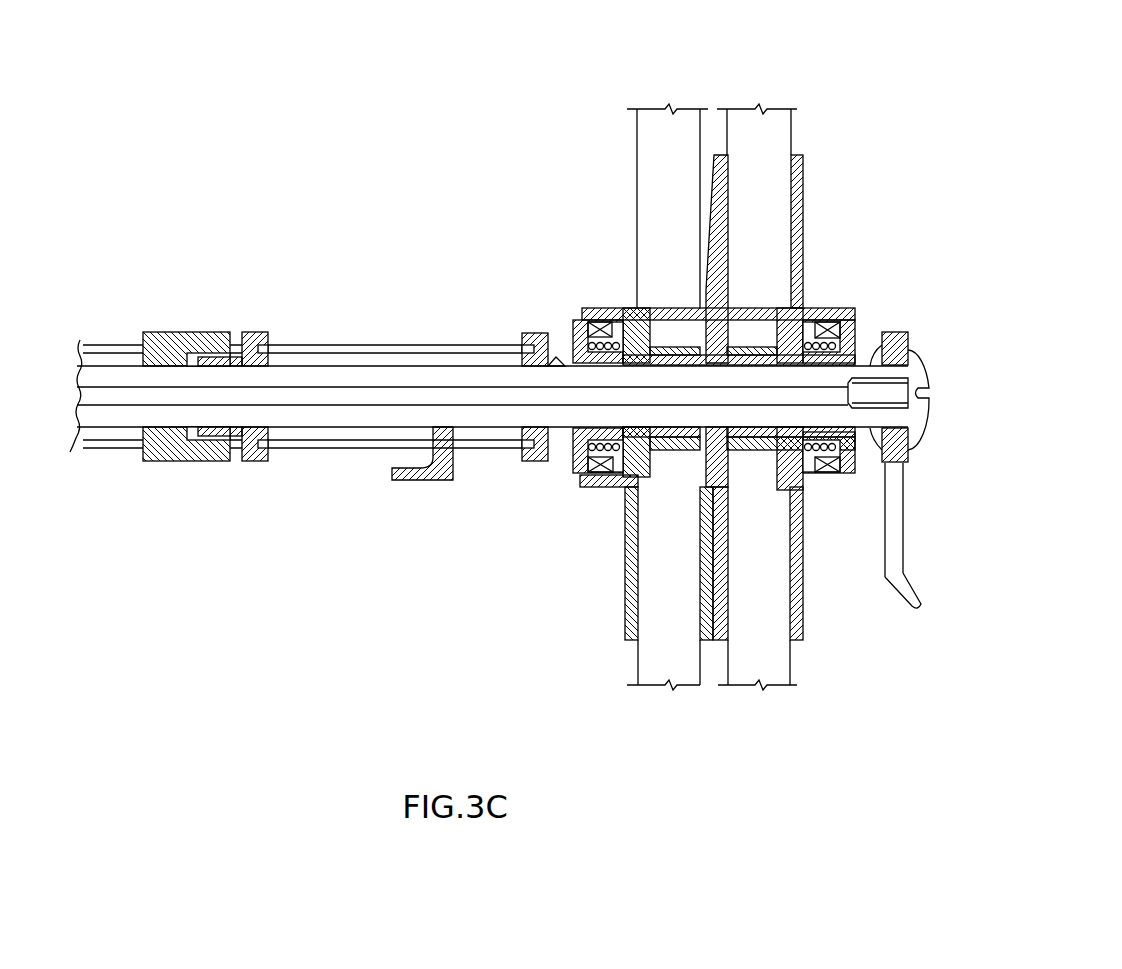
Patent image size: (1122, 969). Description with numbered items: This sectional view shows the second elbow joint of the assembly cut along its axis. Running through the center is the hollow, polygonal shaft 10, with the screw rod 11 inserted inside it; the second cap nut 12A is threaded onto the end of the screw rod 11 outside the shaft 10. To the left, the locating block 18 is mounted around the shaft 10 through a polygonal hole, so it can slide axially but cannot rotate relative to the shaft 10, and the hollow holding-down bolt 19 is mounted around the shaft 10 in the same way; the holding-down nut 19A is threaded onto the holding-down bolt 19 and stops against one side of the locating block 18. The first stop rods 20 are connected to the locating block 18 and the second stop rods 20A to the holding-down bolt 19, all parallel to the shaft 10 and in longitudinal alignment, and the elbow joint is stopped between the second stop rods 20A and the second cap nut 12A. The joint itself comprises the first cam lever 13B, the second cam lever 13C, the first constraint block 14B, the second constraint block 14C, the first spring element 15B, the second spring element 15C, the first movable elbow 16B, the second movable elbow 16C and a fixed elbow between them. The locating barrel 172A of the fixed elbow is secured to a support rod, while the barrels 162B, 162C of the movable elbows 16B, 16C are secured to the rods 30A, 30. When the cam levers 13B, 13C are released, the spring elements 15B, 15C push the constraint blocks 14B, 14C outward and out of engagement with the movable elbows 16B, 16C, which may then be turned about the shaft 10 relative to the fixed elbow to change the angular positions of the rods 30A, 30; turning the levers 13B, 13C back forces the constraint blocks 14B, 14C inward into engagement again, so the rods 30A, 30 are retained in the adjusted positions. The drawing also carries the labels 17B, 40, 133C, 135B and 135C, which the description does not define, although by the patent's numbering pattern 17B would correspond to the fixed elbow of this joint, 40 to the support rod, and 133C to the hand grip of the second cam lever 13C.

The shaft 10 is at (346, 365).
The screw rod 11 is at (413, 390).
The first stop rods 20 is at (100, 343).
The second stop rods 20A is at (452, 345).
The locating block 18 is at (157, 332).
The holding-down nut 19A is at (219, 357).
The holding-down bolt 19 is at (250, 462).
The first cam lever 13B is at (541, 322).
The mounting bracket 135B is at (410, 480).
The second cam lever 13C is at (932, 327).
The second constraint block 14C is at (855, 330).
The first constraint block 14B is at (578, 458).
The first movable elbow 16B is at (628, 320).
The first spring element 15B is at (605, 472).
The second movable elbow 16C is at (825, 312).
The second spring element 15C is at (822, 460).
The locking key 17B is at (703, 327).
The upper tube 40 is at (773, 133).
The locating barrel 172A is at (803, 188).
The barrel 162B is at (627, 625).
The barrel 162C is at (803, 625).
The rod 30A is at (690, 658).
The rod 30 is at (773, 658).
The second cap nut 12A is at (922, 378).
The support arm 133C is at (898, 523).
The arm hook 135C is at (893, 577).